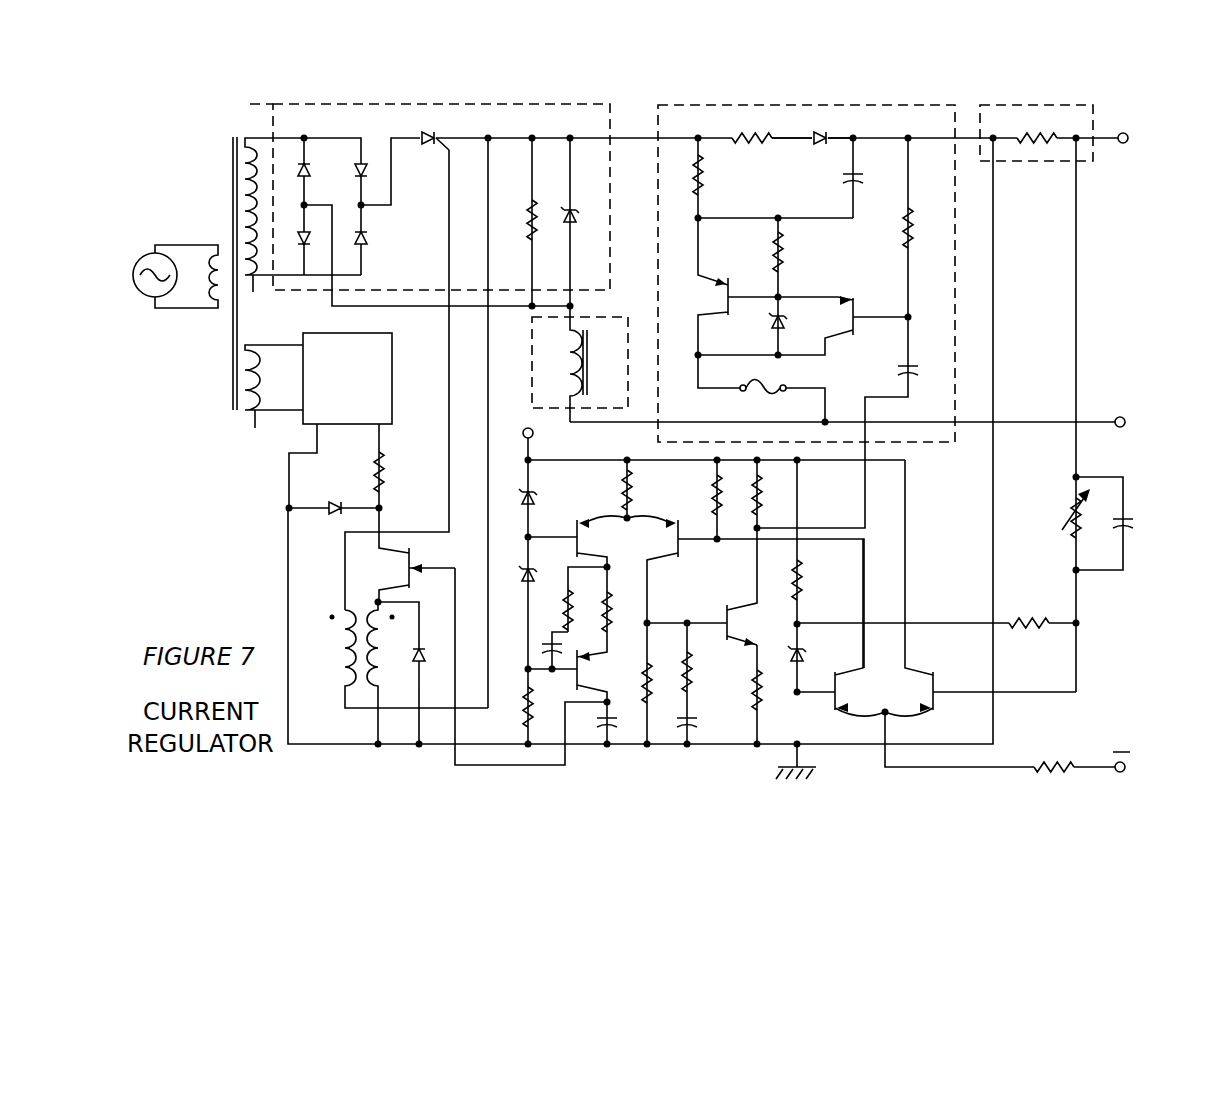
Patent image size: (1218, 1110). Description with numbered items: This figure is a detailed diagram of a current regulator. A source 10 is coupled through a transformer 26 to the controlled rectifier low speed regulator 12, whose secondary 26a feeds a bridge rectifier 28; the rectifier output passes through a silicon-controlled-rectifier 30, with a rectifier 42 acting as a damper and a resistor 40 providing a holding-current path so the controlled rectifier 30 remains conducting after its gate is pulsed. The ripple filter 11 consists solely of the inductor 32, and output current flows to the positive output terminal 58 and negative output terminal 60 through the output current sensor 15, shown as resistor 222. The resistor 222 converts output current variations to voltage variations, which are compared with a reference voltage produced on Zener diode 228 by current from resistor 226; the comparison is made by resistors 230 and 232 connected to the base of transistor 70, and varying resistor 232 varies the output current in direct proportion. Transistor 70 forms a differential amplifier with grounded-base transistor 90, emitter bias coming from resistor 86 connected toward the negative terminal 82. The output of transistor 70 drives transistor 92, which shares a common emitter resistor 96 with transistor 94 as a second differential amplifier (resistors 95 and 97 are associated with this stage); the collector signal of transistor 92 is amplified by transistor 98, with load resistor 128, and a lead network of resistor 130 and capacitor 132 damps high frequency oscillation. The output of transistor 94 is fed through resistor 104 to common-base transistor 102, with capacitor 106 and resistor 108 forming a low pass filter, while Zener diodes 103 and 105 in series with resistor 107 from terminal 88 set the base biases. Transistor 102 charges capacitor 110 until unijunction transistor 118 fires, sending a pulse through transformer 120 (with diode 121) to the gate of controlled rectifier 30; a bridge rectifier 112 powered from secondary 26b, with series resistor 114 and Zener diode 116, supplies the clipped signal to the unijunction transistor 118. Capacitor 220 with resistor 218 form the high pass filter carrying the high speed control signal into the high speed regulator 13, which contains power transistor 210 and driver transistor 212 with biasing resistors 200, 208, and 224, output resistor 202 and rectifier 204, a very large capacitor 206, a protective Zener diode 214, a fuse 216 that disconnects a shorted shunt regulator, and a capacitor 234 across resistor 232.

The source 10 is at (143, 262).
The ripple filter 11 is at (531, 318).
The rectifier unit 12 is at (418, 192).
The high speed regulator 13 is at (950, 442).
The output current sensor 15 is at (1093, 161).
The transformer 26 is at (230, 390).
The secondary 26a is at (273, 224).
The secondary 26b is at (273, 398).
The bridge rectifier 28 is at (333, 138).
The silicon-controlled-rectifier 30 is at (428, 146).
The input inductor 32 is at (588, 352).
The resistor 40 is at (525, 215).
The rectifier 42 is at (575, 225).
The positive output terminal 58 is at (1137, 129).
The negative output terminal 60 is at (884, 414).
The transistor 70 is at (946, 682).
The negative terminal 82 is at (1021, 745).
The resistor 86 is at (1057, 765).
The terminal 88 is at (532, 442).
The transistor 90 is at (840, 692).
The transistor 92 is at (681, 556).
The transistor 94 is at (581, 542).
The resistor 95 is at (653, 684).
The common emitter resistor 96 is at (636, 502).
The resistor 97 is at (710, 498).
The transistor 98 is at (733, 622).
The transistor 102 is at (584, 672).
The Zener diode 103 is at (540, 497).
The resistor 104 is at (611, 603).
The Zener diode 105 is at (525, 583).
The capacitor 106 is at (562, 650).
The resistor 107 is at (522, 712).
The resistor 108 is at (576, 603).
The capacitor 110 is at (600, 722).
The bridge rectifier 112 is at (392, 424).
The series resistor 114 is at (400, 469).
The Zener diode 116 is at (334, 503).
The unijunction transistor 118 is at (405, 573).
The transformer 120 is at (343, 662).
The diode 121 is at (415, 662).
The load resistor 128 is at (750, 683).
The resistor 130 is at (690, 668).
The capacitor 132 is at (696, 727).
The resistor 200 is at (705, 180).
The resistor 202 is at (752, 143).
The rectifier 204 is at (813, 144).
The capacitor 206 is at (860, 172).
The resistor 208 is at (785, 258).
The power transistor 210 is at (728, 308).
The driver transistor 212 is at (853, 333).
The Zener diode 214 is at (787, 322).
The fuse 216 is at (770, 386).
The resistor 218 is at (898, 237).
The capacitor 220 is at (914, 380).
The resistor 222 is at (1028, 136).
The resistor 224 is at (763, 505).
The resistor 226 is at (800, 592).
The Zener diode 228 is at (806, 655).
The resistor 230 is at (1028, 630).
The resistor 232 is at (1066, 515).
The capacitor 234 is at (1130, 532).